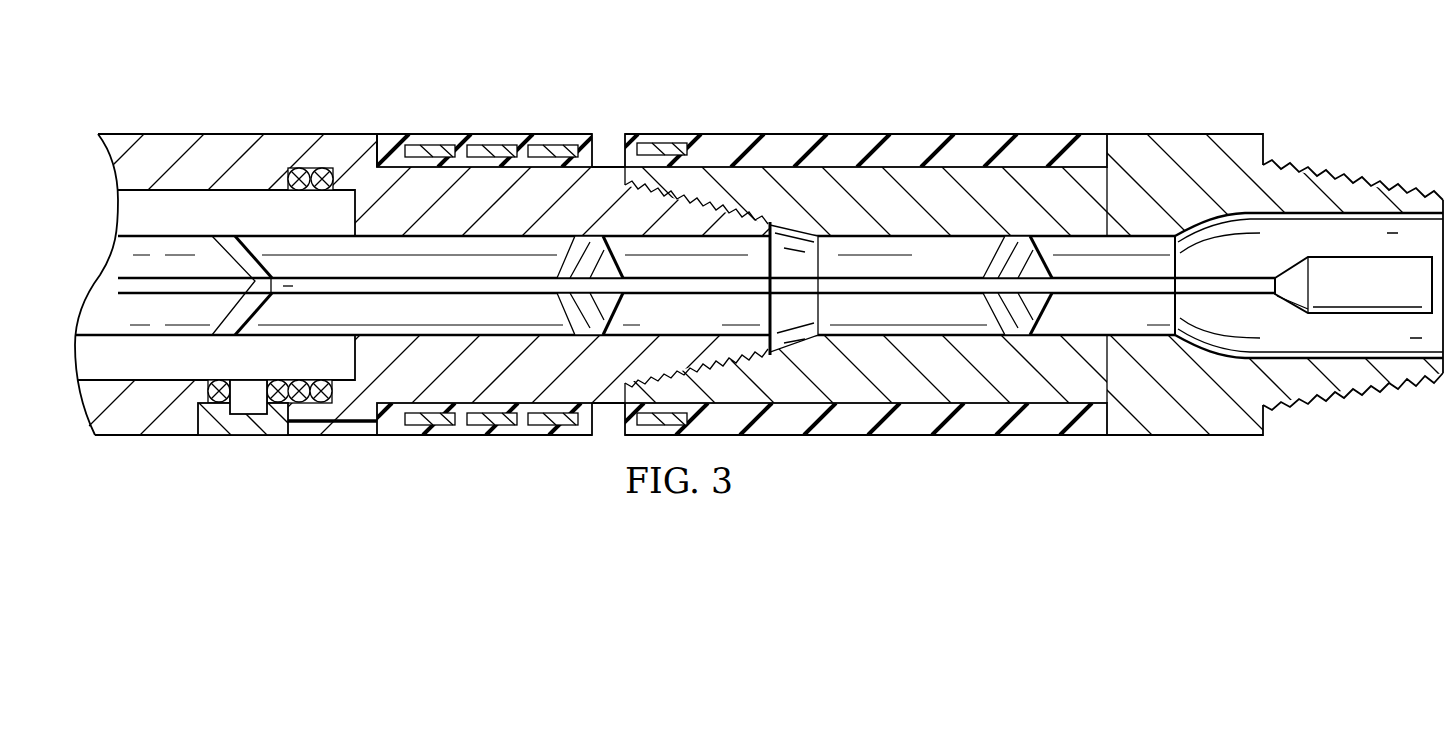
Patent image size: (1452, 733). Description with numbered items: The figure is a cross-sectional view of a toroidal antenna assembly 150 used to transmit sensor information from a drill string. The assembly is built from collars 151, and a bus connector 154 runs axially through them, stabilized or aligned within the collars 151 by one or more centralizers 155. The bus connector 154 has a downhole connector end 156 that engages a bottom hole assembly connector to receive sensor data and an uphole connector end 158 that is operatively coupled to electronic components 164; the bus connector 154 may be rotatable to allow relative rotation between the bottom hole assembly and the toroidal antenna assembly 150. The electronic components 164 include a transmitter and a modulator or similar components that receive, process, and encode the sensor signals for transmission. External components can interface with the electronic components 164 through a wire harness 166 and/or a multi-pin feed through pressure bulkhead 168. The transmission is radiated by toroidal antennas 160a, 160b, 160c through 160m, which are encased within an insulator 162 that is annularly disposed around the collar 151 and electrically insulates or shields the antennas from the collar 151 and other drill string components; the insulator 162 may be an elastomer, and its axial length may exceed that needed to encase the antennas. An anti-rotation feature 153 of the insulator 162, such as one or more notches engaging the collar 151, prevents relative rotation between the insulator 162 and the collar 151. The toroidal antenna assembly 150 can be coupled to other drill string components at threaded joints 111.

The toroidal antenna assembly 150 is at (328, 62).
The collar 151 is at (224, 134).
The anti-rotation feature 153 is at (373, 129).
The bus connector 154 is at (882, 275).
The centralizer 155 is at (602, 318).
The downhole connector end 156 is at (1368, 257).
The uphole connector end 158 is at (232, 307).
The toroidal antenna 160a is at (428, 134).
The toroidal antenna 160b is at (492, 134).
The toroidal antenna 160c is at (553, 134).
The toroidal antenna 160m is at (665, 143).
The insulator 162 is at (855, 145).
The electronic components 164 is at (168, 236).
The wire harness 166 is at (305, 425).
The multi-pin feed through pressure bulkhead 168 is at (245, 430).
The threaded joint 111 is at (1337, 175).